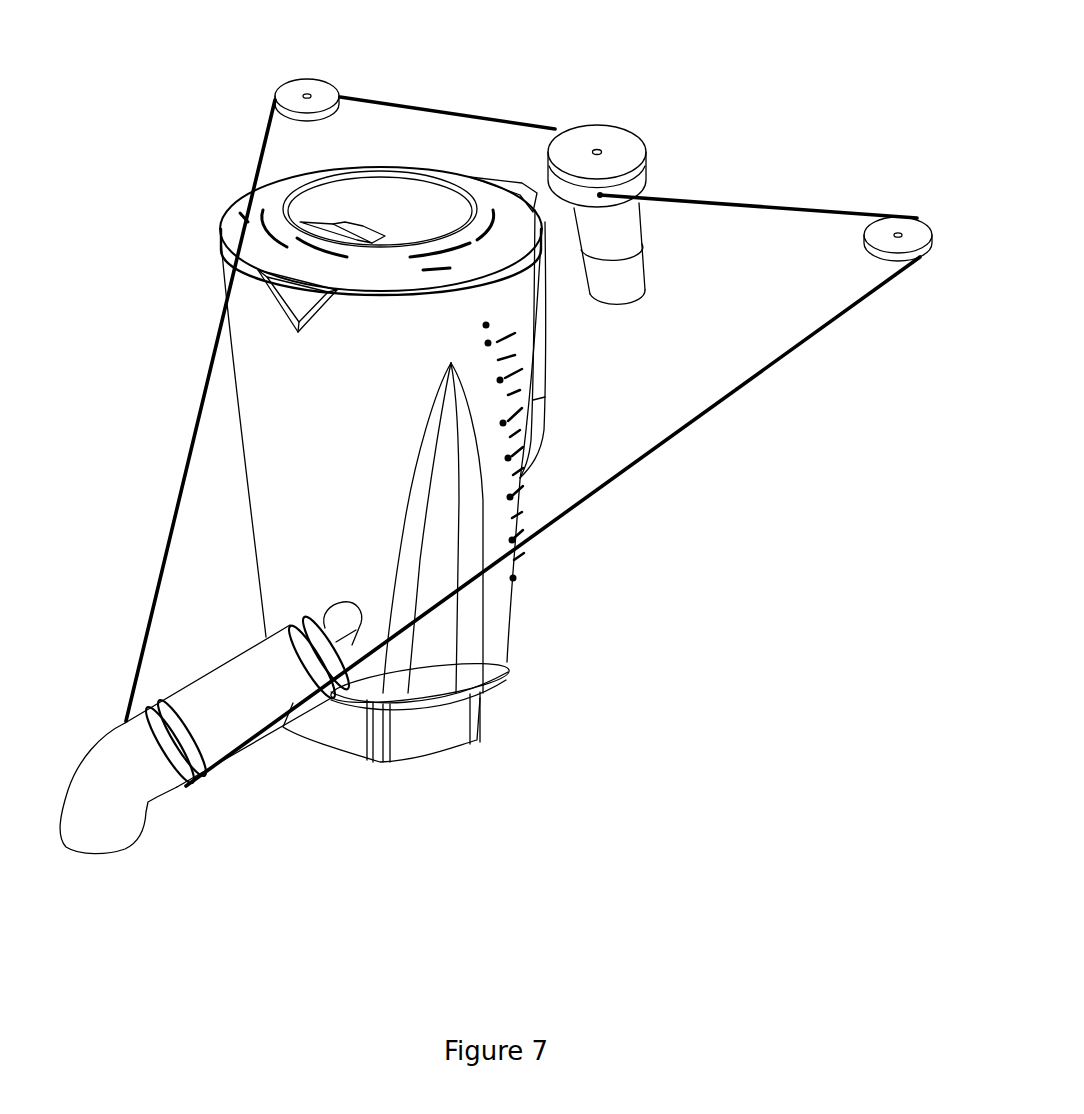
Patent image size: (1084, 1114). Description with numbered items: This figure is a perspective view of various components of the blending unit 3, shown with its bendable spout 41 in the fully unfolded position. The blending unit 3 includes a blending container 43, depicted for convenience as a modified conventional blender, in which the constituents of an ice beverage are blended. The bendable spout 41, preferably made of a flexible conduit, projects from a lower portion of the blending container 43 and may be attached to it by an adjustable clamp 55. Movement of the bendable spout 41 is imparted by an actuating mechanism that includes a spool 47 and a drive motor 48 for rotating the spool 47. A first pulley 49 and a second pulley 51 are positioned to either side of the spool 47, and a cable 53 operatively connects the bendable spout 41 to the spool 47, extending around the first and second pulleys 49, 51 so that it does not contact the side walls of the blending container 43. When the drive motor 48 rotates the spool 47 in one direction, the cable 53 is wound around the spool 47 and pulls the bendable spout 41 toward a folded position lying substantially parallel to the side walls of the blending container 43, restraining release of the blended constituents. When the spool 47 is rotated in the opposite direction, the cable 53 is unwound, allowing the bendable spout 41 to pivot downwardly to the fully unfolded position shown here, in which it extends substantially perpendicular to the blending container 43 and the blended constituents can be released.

The blending unit 3 is at (676, 631).
The bendable spout 41 is at (210, 687).
The blending container 43 is at (243, 300).
The spool 47 is at (620, 142).
The drive motor 48 is at (637, 257).
The first pulley 49 is at (325, 88).
The second pulley 51 is at (912, 228).
The cable 53 is at (796, 344).
The adjustable clamp 55 is at (350, 700).